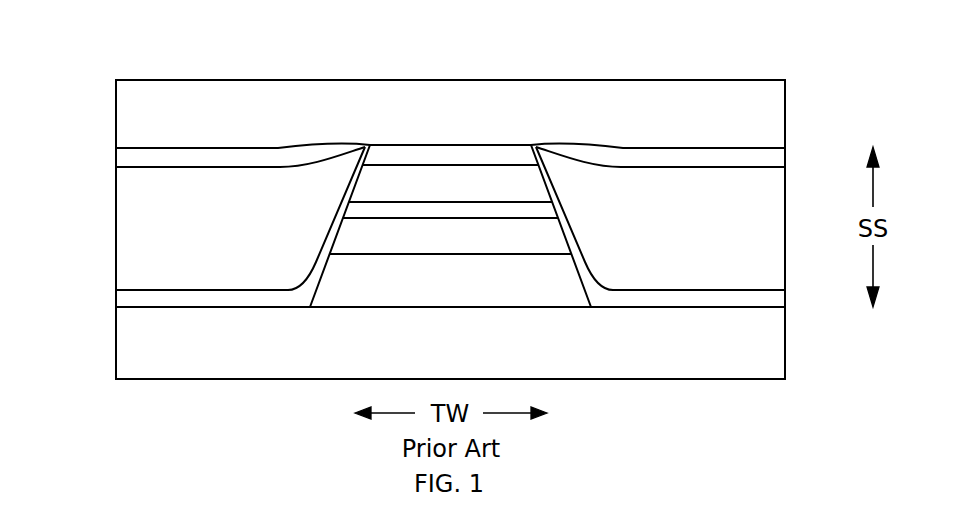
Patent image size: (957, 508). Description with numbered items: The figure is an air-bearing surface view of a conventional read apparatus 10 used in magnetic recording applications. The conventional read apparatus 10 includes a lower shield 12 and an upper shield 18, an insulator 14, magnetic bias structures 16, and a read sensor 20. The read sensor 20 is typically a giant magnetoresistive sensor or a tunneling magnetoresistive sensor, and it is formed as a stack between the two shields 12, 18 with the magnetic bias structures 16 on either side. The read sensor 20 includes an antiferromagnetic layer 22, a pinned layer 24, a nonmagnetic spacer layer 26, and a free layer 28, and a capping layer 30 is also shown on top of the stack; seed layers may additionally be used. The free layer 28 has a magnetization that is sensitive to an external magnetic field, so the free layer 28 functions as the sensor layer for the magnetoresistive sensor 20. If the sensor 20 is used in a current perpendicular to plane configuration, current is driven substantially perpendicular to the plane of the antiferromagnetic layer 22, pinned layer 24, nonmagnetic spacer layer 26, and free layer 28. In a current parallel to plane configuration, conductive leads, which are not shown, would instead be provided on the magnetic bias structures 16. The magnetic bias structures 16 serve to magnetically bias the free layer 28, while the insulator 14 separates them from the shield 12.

The conventional read apparatus 10 is at (437, 57).
The shield 12 is at (450, 340).
The insulator 14 is at (129, 310).
The magnetic bias structures 16 is at (450, 235).
The shield 18 is at (450, 124).
The read sensor 20 is at (538, 327).
The antiferromagnetic (AFM) layer 22 is at (451, 275).
The pinned layer 24 is at (450, 234).
The nonmagnetic spacer layer 26 is at (342, 210).
The free layer 28 is at (450, 186).
The capping layer 30 is at (451, 154).